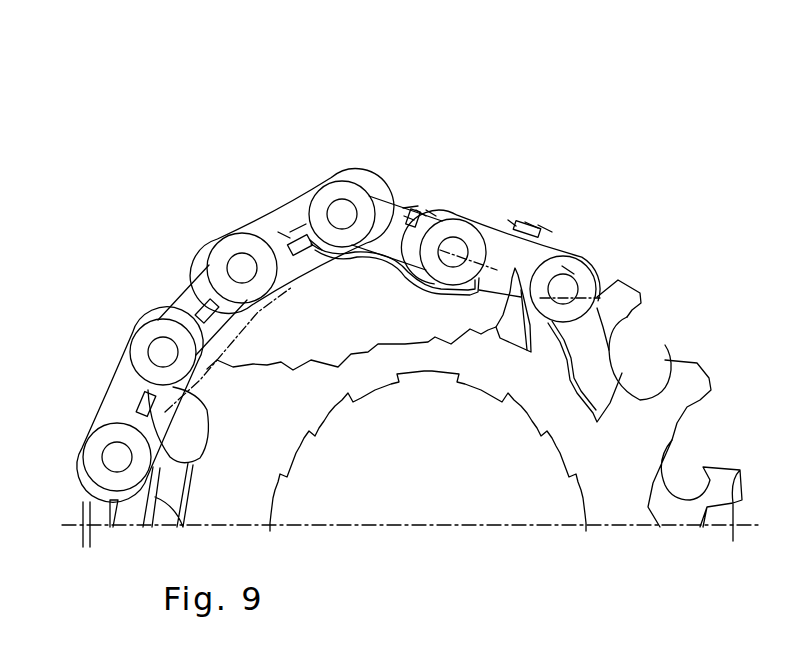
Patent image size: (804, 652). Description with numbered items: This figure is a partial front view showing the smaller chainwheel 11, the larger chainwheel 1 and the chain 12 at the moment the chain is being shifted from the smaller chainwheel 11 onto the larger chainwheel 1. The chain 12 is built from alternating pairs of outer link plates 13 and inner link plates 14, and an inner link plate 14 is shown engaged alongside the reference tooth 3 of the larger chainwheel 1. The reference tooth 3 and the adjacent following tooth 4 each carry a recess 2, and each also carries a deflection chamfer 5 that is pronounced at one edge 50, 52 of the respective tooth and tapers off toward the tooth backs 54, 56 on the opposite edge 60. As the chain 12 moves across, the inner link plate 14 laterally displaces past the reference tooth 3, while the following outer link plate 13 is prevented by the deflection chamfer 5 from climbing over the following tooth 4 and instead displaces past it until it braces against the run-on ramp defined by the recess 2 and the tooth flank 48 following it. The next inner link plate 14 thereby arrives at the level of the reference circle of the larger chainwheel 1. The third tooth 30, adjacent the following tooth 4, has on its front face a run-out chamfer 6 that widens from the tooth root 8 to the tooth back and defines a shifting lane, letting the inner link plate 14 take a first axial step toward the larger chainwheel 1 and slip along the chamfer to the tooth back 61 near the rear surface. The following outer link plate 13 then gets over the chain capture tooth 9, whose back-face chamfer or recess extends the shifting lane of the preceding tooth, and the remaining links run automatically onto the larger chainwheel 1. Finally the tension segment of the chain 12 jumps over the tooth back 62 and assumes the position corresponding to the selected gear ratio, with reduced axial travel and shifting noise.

The larger chainwheel 1 is at (676, 382).
The recess 2 is at (463, 285).
The reference tooth 3 is at (531, 225).
The following tooth 4 is at (421, 213).
The deflection chamfer 5 is at (407, 212).
The run-out chamfer 6 is at (283, 235).
The tooth root 8 is at (268, 297).
The chain capture tooth 9 is at (177, 312).
The smaller chainwheel 11 is at (619, 420).
The chain 12 is at (569, 262).
The outer link plate 13 is at (294, 215).
The inner link plate 14 is at (262, 228).
The third tooth 30 is at (303, 235).
The tooth flank 48 is at (316, 245).
The edge 50 is at (545, 228).
The edge 52 is at (431, 213).
The tooth back 54 is at (525, 225).
The tooth back 56 is at (408, 213).
The edge 60 is at (405, 212).
The tooth back 61 is at (292, 245).
The tooth back 62 is at (207, 303).